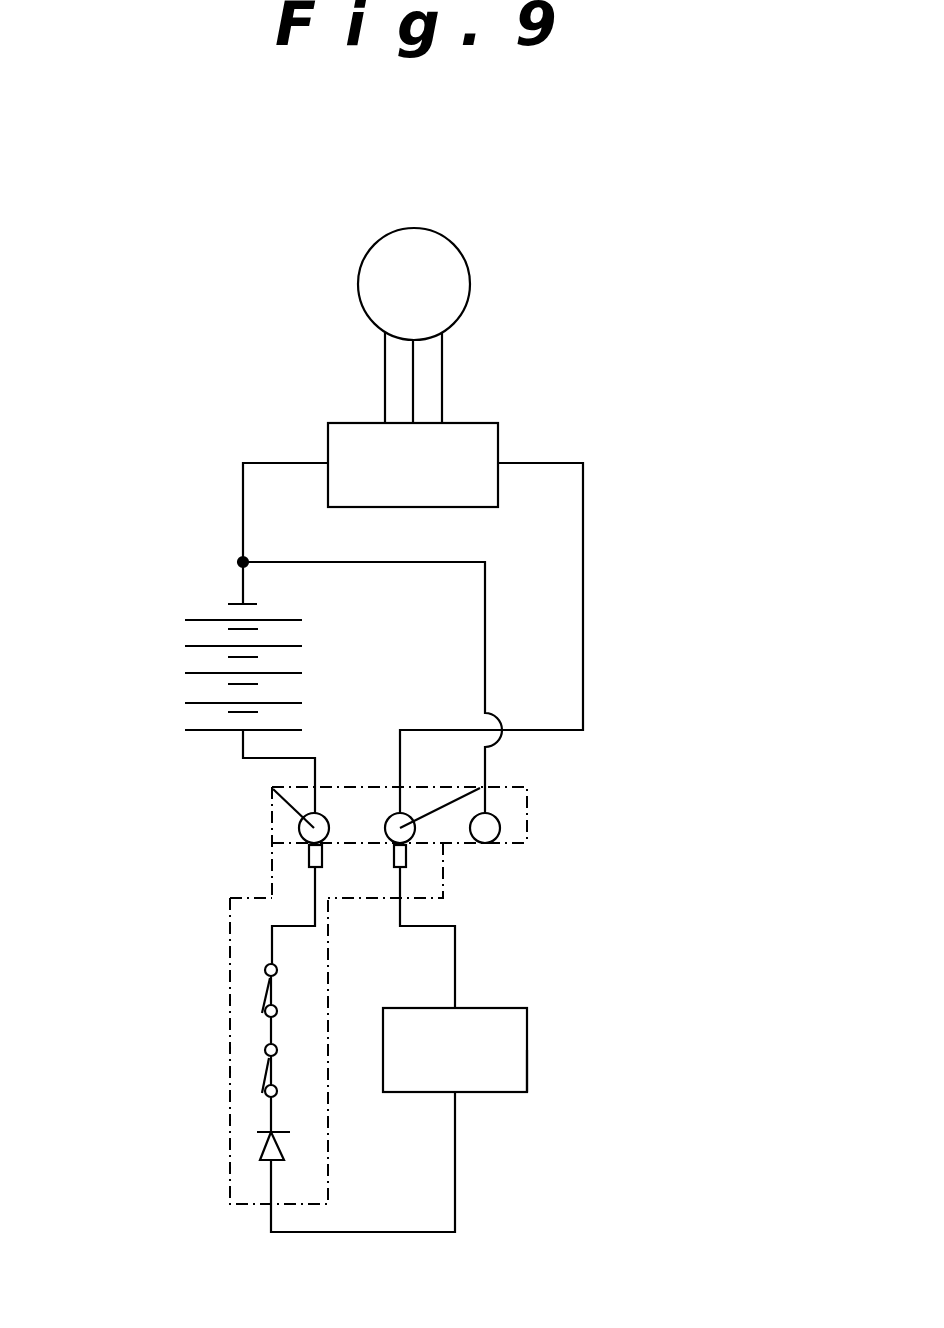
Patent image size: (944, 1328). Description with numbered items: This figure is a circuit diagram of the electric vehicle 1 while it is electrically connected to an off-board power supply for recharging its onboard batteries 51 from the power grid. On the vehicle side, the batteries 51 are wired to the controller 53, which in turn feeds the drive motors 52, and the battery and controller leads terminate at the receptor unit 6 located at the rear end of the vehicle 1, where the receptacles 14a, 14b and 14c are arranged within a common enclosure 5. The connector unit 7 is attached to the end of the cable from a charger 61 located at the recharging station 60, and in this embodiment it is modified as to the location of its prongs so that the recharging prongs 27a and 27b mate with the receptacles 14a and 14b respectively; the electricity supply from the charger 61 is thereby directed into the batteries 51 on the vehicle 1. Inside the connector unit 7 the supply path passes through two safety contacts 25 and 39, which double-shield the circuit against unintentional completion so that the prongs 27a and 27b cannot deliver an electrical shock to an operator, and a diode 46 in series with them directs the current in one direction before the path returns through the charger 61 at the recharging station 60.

The vehicle 1 is at (558, 372).
The control unit 5 is at (200, 855).
The receptor unit 6 is at (262, 815).
The connector unit 7 is at (218, 1010).
The receptacle 14a is at (273, 789).
The receptacle 14b is at (480, 788).
The switch contact 14c is at (500, 828).
The safety contact 25 is at (266, 993).
The recharging prong 27a is at (310, 857).
The recharging prong 27b is at (407, 853).
The safety contact 39 is at (263, 1073).
The diode 46 is at (260, 1148).
The batteries 51 is at (175, 643).
The drive motors 52 is at (370, 292).
The controller 53 is at (337, 452).
The recharging station 60 is at (548, 1032).
The charger 61 is at (523, 1065).